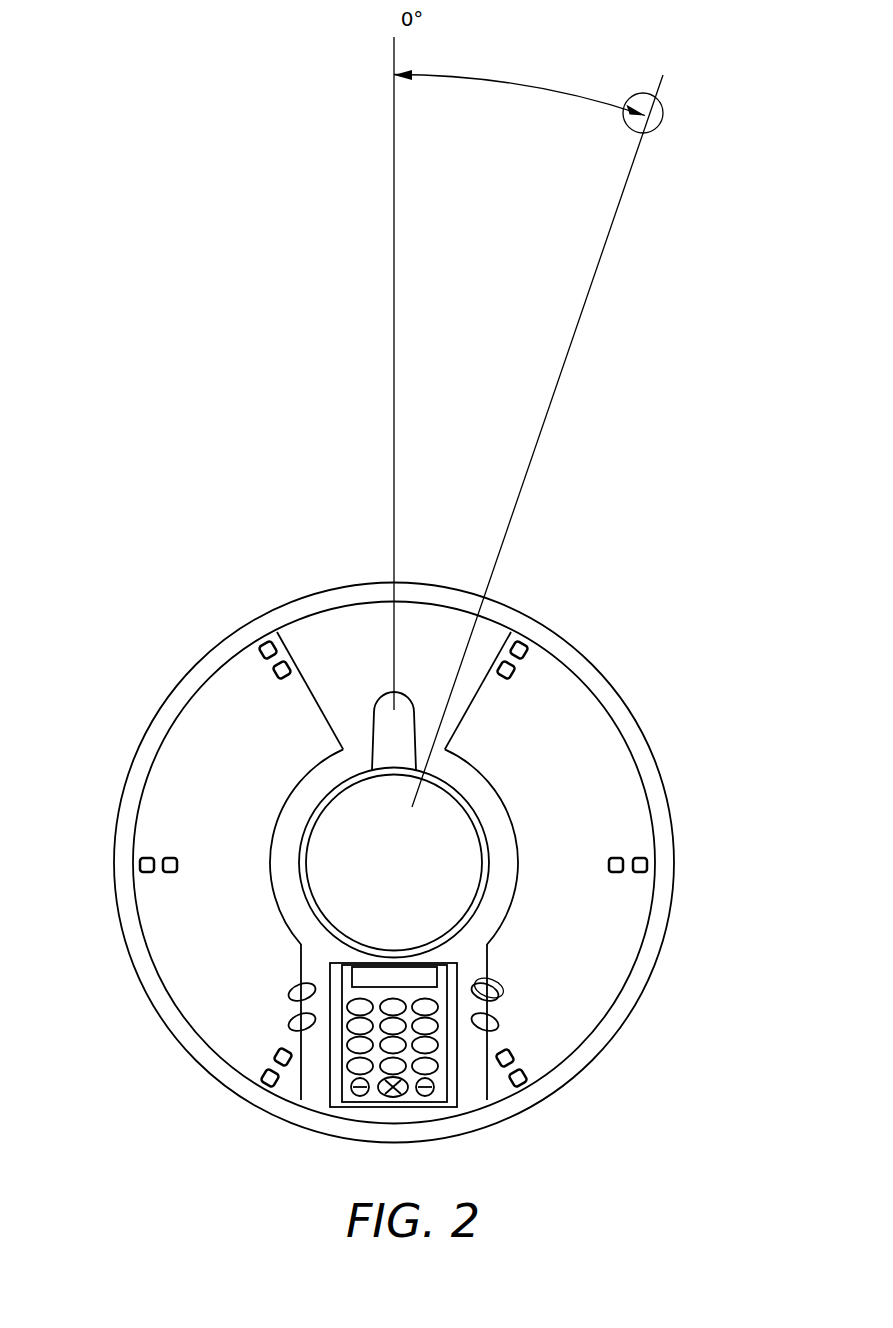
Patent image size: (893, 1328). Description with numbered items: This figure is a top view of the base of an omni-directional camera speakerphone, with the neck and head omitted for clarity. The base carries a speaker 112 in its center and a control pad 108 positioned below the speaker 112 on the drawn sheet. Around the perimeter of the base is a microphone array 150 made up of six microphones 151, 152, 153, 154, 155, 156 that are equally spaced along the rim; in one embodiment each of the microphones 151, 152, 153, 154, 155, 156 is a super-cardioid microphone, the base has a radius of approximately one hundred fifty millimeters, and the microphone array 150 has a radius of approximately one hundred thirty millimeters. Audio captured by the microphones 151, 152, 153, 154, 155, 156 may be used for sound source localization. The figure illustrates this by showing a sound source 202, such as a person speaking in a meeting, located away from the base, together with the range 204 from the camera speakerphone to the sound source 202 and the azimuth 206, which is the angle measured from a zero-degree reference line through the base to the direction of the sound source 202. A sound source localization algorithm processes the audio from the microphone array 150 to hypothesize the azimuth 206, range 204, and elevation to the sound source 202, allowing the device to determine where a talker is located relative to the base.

The microphone array 150 is at (118, 166).
The speaker 112 is at (333, 815).
The control pad 108 is at (395, 1097).
The microphone 151 is at (267, 1088).
The microphone 152 is at (140, 864).
The microphone 153 is at (270, 645).
The microphone 154 is at (515, 645).
The microphone 155 is at (648, 865).
The microphone 156 is at (520, 1087).
The sound source 202 is at (667, 107).
The range 204 is at (627, 305).
The azimuth 206 is at (538, 46).